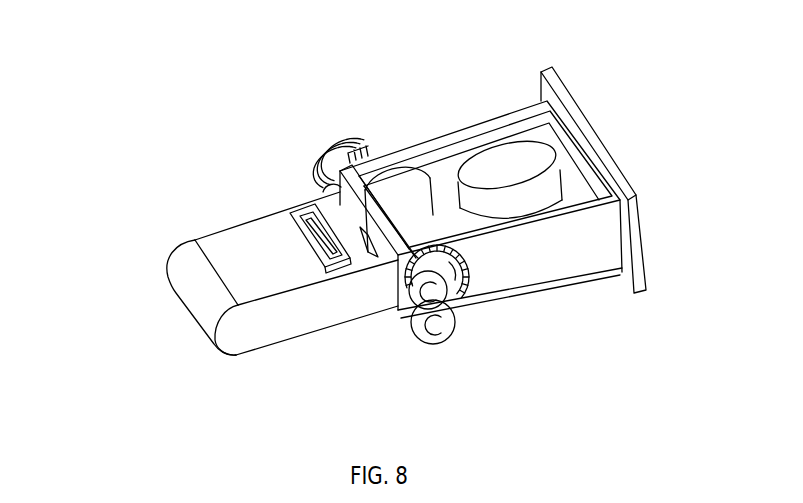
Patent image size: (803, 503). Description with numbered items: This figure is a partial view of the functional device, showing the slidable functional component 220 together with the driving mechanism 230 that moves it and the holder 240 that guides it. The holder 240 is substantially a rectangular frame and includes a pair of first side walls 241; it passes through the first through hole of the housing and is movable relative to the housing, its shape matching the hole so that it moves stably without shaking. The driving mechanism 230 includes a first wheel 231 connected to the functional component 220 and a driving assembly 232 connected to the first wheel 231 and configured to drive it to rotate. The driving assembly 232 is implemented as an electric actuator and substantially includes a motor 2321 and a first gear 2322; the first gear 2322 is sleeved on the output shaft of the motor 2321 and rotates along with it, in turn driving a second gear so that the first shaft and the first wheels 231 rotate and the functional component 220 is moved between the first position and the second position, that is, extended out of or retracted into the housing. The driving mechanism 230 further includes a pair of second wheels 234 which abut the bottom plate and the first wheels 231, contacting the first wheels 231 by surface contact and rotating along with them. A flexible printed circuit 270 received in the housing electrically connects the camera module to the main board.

The flexible printed circuit 270 is at (250, 258).
The first side walls 241 is at (408, 160).
The holder 240 is at (571, 138).
The functional component 220 is at (528, 180).
The driving mechanism 230 is at (285, 498).
The driving assembly 232 is at (490, 305).
The first gear 2322 is at (418, 175).
The motor 2321 is at (438, 228).
The second wheels 234 is at (420, 340).
The first wheel 231 is at (402, 318).